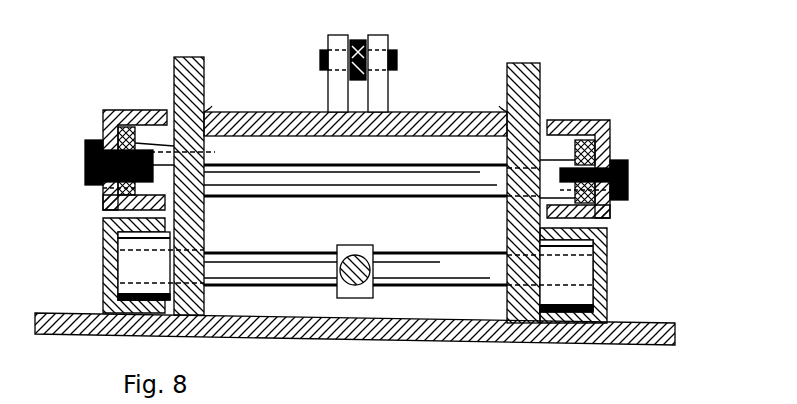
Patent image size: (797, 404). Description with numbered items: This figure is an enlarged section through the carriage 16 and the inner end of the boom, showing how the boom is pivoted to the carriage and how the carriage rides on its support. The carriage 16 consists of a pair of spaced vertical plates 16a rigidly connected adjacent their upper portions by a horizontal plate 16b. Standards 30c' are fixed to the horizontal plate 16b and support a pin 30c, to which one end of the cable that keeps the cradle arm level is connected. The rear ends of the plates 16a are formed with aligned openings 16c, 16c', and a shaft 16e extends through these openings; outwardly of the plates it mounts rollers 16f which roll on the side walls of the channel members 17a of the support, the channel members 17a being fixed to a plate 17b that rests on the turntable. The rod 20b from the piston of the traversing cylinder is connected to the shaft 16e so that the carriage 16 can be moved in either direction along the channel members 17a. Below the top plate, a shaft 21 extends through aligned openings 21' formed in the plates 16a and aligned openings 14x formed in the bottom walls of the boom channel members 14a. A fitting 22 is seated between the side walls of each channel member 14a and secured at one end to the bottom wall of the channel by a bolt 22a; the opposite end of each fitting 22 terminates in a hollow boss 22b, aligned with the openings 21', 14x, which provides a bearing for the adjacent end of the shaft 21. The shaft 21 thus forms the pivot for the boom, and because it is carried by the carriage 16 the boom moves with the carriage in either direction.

The channel member 14a is at (103, 115).
The aligned opening 14x is at (108, 212).
The carriage 16 is at (226, 298).
The vertical plate 16a is at (174, 80).
The horizontal plate 16b is at (468, 115).
The aligned opening 16c is at (181, 256).
The aligned opening 16c' is at (524, 283).
The shaft 16e is at (273, 258).
The roller 16f is at (120, 290).
The channel member 17a is at (103, 262).
The plate 17b is at (492, 343).
The rod 20b is at (347, 250).
The shaft 21 is at (355, 195).
The aligned opening 21' is at (190, 154).
The fitting 22 is at (103, 134).
The bolt 22a is at (85, 160).
The hollow boss 22b is at (510, 214).
The pin 30c is at (377, 53).
The standard 30c' is at (361, 73).